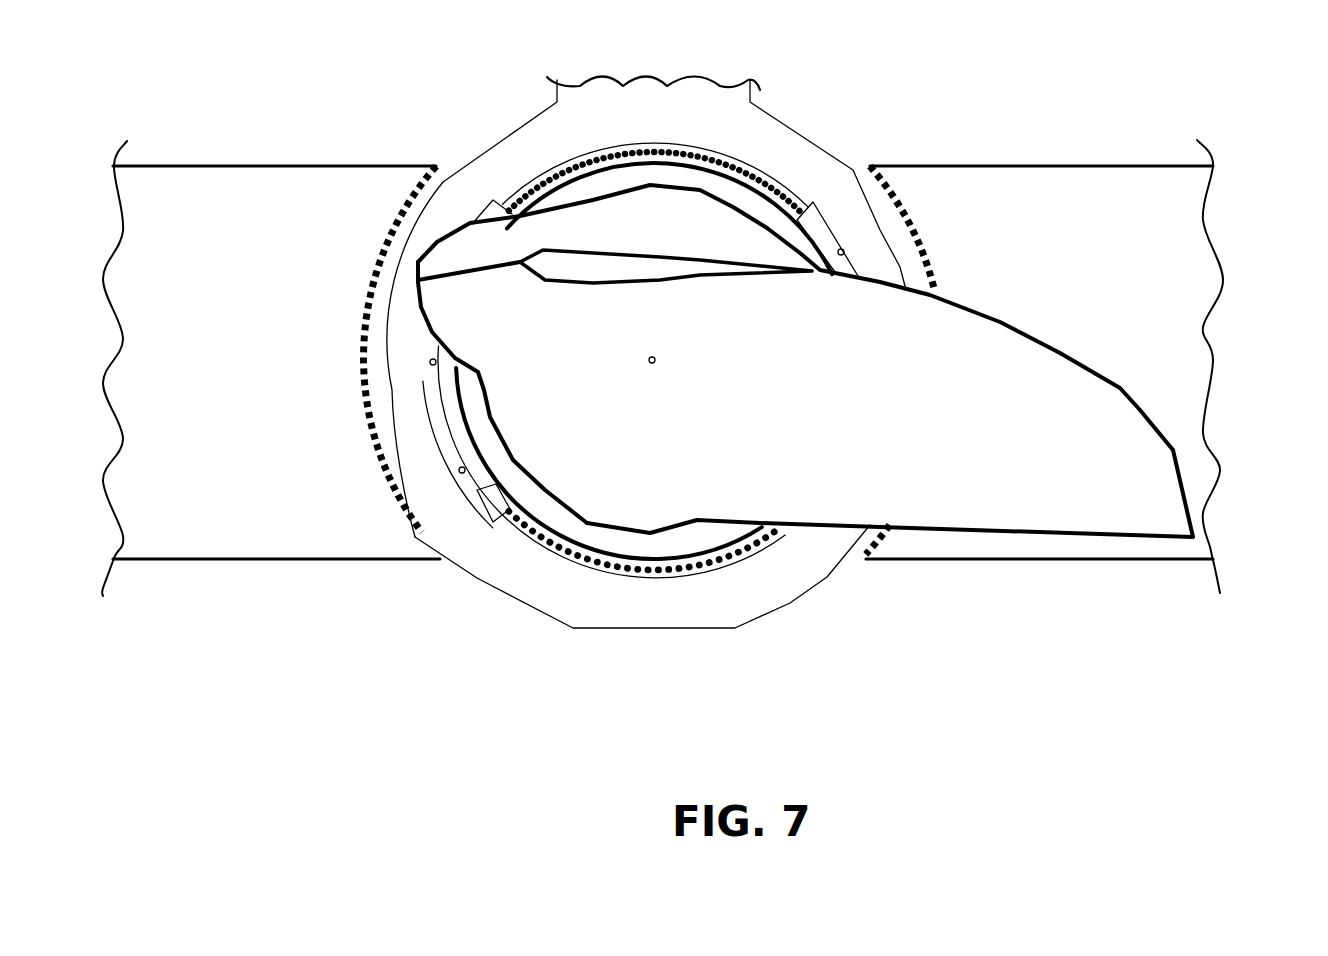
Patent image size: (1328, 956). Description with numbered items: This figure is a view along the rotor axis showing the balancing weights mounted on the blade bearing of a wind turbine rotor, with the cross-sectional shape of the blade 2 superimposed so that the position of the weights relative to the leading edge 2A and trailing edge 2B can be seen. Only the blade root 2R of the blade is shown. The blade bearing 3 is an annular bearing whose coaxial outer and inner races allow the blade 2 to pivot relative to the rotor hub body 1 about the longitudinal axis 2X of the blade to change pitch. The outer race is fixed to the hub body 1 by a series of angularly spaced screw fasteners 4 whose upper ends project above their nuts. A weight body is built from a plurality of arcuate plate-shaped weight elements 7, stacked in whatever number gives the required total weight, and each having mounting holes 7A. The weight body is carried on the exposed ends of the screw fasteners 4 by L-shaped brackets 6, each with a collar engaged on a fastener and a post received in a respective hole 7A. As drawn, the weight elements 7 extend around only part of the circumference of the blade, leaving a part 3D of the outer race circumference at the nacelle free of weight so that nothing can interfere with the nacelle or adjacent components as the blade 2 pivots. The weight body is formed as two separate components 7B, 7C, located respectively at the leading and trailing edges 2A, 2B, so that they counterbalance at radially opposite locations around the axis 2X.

The rotor hub body 1 is at (759, 143).
The blade 2 is at (920, 422).
The leading edge 2A is at (417, 280).
The trailing edge 2B is at (1194, 535).
The blade root 2R is at (707, 533).
The longitudinal axis of the blade 2X is at (655, 362).
The blade bearing 3 is at (560, 172).
The free part of the outer race circumference 3D is at (498, 490).
The screw fasteners 4 is at (768, 175).
The L-shaped brackets 6 is at (430, 362).
The weight elements 7 is at (445, 420).
The mounting holes 7A is at (459, 472).
The first weight body component 7B is at (428, 382).
The second weight body component 7C is at (845, 251).